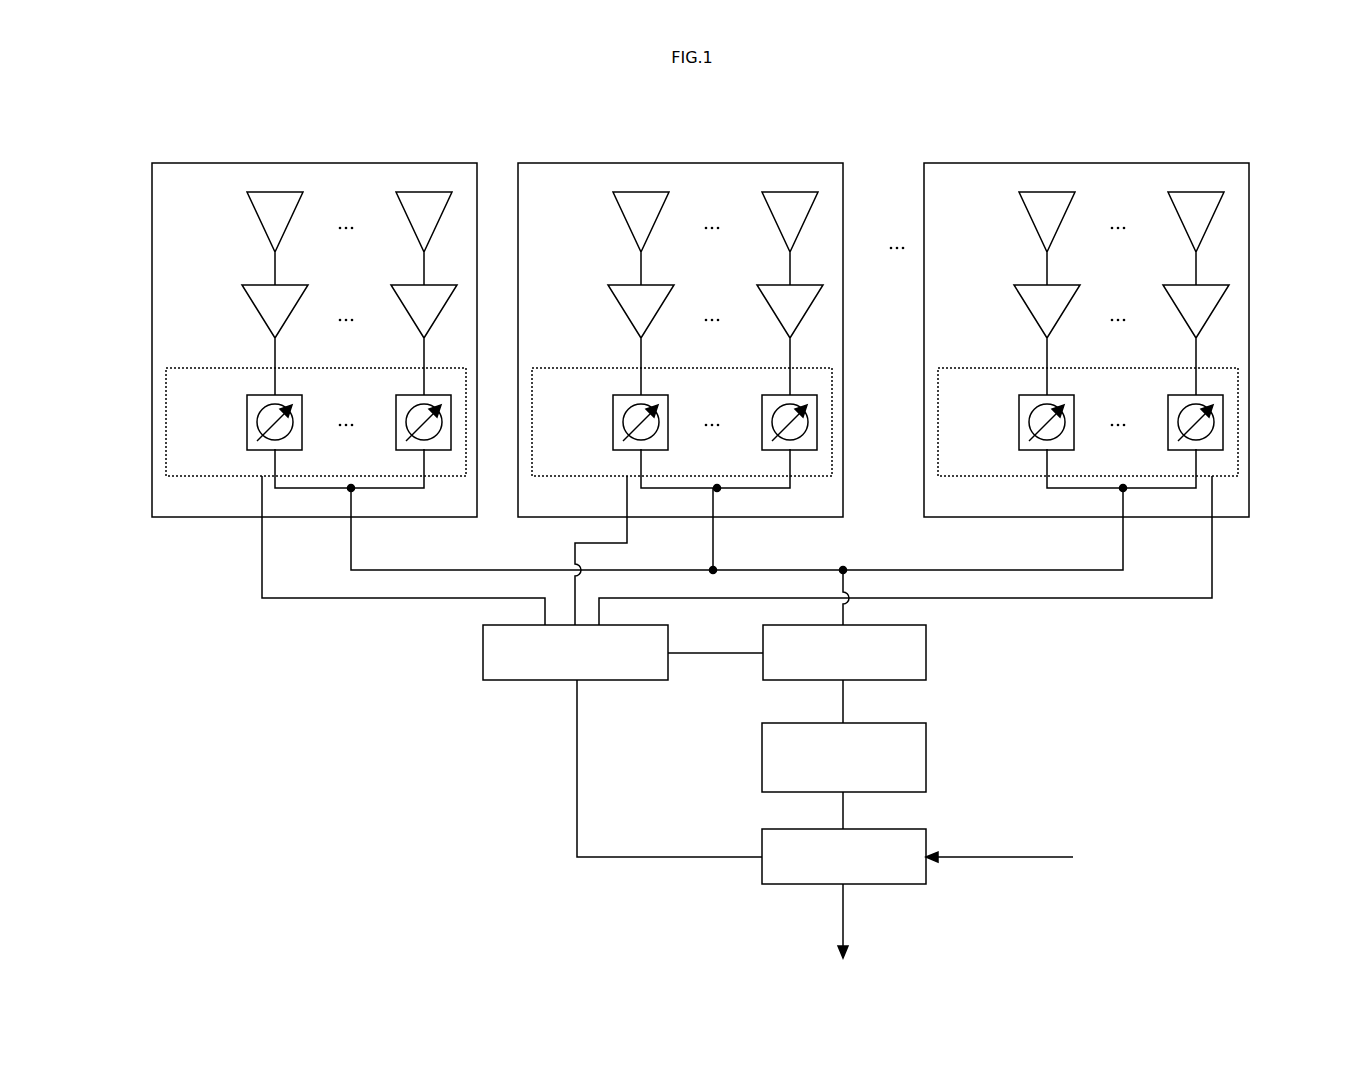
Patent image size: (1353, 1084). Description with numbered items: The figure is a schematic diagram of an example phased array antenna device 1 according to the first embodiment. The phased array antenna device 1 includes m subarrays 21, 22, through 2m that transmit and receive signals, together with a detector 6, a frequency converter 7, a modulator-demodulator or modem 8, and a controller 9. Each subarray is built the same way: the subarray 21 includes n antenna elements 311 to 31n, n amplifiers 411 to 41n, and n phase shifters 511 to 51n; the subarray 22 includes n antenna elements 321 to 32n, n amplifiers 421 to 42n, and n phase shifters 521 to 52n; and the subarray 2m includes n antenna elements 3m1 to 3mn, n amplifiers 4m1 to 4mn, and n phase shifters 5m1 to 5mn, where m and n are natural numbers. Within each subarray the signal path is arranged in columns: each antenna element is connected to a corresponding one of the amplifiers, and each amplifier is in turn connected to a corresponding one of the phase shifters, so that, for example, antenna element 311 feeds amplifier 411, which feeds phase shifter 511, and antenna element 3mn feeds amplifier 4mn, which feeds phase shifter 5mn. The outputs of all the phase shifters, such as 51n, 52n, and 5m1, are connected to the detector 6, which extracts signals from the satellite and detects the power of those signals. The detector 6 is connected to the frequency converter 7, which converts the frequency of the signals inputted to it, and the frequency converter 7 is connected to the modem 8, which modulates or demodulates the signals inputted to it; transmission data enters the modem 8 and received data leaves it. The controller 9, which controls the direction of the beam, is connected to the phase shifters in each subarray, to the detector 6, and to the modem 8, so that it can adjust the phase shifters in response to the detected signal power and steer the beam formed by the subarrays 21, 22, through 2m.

The phased array antenna device 1 is at (213, 125).
The subarray 21 is at (381, 163).
The subarray 22 is at (680, 308).
The subarray 2m is at (1086, 308).
The antenna element 311 is at (257, 213).
The antenna element 31n is at (406, 213).
The antenna element 321 is at (613, 229).
The antenna element 32n is at (762, 229).
The antenna element 3m1 is at (1017, 229).
The antenna element 3mn is at (1166, 229).
The amplifier 411 is at (250, 310).
The amplifier 41n is at (400, 310).
The amplifier 421 is at (611, 340).
The amplifier 42n is at (760, 340).
The amplifier 4m1 is at (1016, 340).
The amplifier 4mn is at (1164, 340).
The phase shifter 511 is at (247, 421).
The phase shifter 51n is at (396, 421).
The phase shifter 521 is at (607, 416).
The phase shifter 52n is at (757, 416).
The phase shifter 5m1 is at (1012, 416).
The phase shifter 5mn is at (1161, 416).
The detector 6 is at (763, 668).
The frequency converter 7 is at (762, 778).
The modulator-demodulator (modem) 8 is at (762, 872).
The controller 9 is at (483, 668).